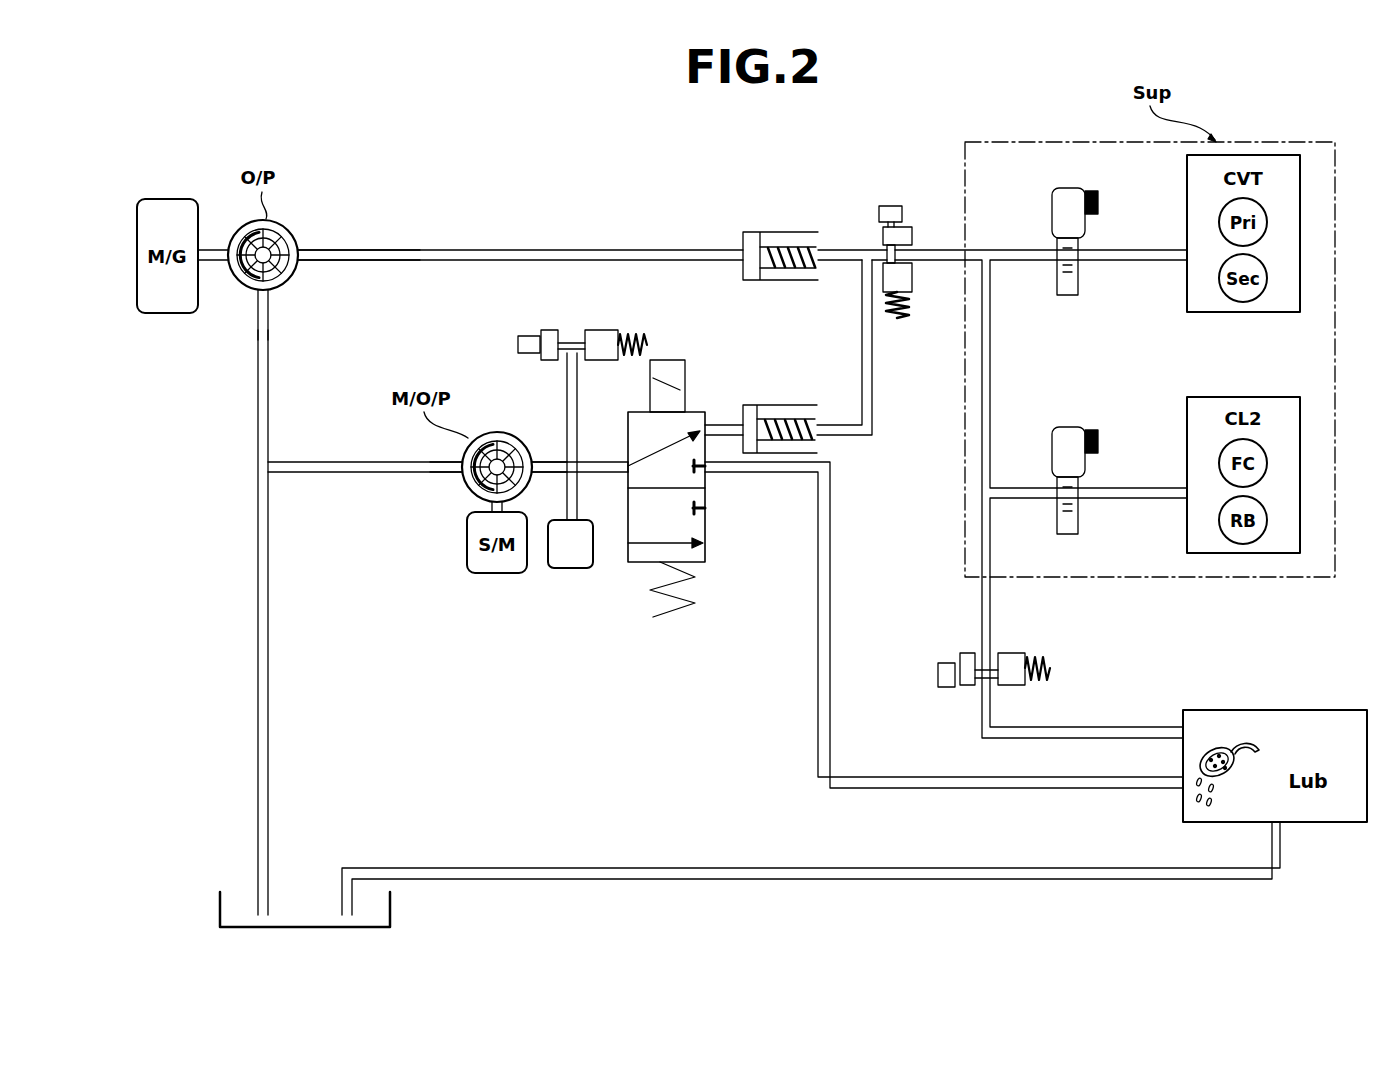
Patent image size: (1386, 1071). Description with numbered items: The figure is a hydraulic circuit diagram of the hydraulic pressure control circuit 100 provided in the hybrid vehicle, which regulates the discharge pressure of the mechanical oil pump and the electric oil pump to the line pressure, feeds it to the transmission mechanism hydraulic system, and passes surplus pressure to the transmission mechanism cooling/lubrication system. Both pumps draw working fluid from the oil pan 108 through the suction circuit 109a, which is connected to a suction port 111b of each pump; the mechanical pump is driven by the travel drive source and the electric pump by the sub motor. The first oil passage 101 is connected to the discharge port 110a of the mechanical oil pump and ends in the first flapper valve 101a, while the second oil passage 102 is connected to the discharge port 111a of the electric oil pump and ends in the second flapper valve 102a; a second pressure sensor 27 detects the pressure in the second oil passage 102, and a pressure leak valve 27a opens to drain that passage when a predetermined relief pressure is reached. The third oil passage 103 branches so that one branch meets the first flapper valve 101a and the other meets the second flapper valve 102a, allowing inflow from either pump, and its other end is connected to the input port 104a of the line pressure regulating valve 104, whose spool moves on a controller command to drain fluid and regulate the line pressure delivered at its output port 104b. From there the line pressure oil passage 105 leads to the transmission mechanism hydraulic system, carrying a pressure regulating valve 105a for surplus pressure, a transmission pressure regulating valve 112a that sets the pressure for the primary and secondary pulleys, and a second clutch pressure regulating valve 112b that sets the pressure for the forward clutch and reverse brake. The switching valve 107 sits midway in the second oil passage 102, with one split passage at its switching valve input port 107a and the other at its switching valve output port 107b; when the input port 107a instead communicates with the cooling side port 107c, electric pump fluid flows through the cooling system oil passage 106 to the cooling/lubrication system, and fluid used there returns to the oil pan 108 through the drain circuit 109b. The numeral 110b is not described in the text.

The hydraulic pressure control circuit 100 is at (240, 151).
The first oil passage 101 is at (515, 249).
The first flapper valve 101a is at (769, 231).
The second oil passage 102 is at (598, 461).
The second flapper valve 102a is at (793, 404).
The third oil passage 103 is at (875, 358).
The line pressure regulating valve 104 is at (889, 205).
The input port 104a is at (886, 256).
The output port 104b is at (906, 248).
The line pressure oil passage 105 is at (936, 264).
The pressure regulating valve 105a is at (968, 688).
The cooling system oil passage 106 is at (816, 581).
The switching valve 107 is at (696, 400).
The switching valve input port 107a is at (628, 472).
The switching valve output port 107b is at (708, 427).
The cooling side port 107c is at (708, 468).
The oil pan 108 is at (219, 905).
The suction circuit 109a is at (257, 603).
The drain circuit 109b is at (750, 867).
The discharge port 110a is at (301, 249).
The mechanical pump suction port 110b is at (259, 298).
The discharge port 111a is at (542, 474).
The suction port 111b is at (452, 473).
The transmission pressure regulating valve 112a is at (1071, 188).
The second clutch pressure regulating valve 112b is at (1070, 428).
The second pressure sensor 27 is at (572, 570).
The pressure leak valve 27a is at (549, 330).